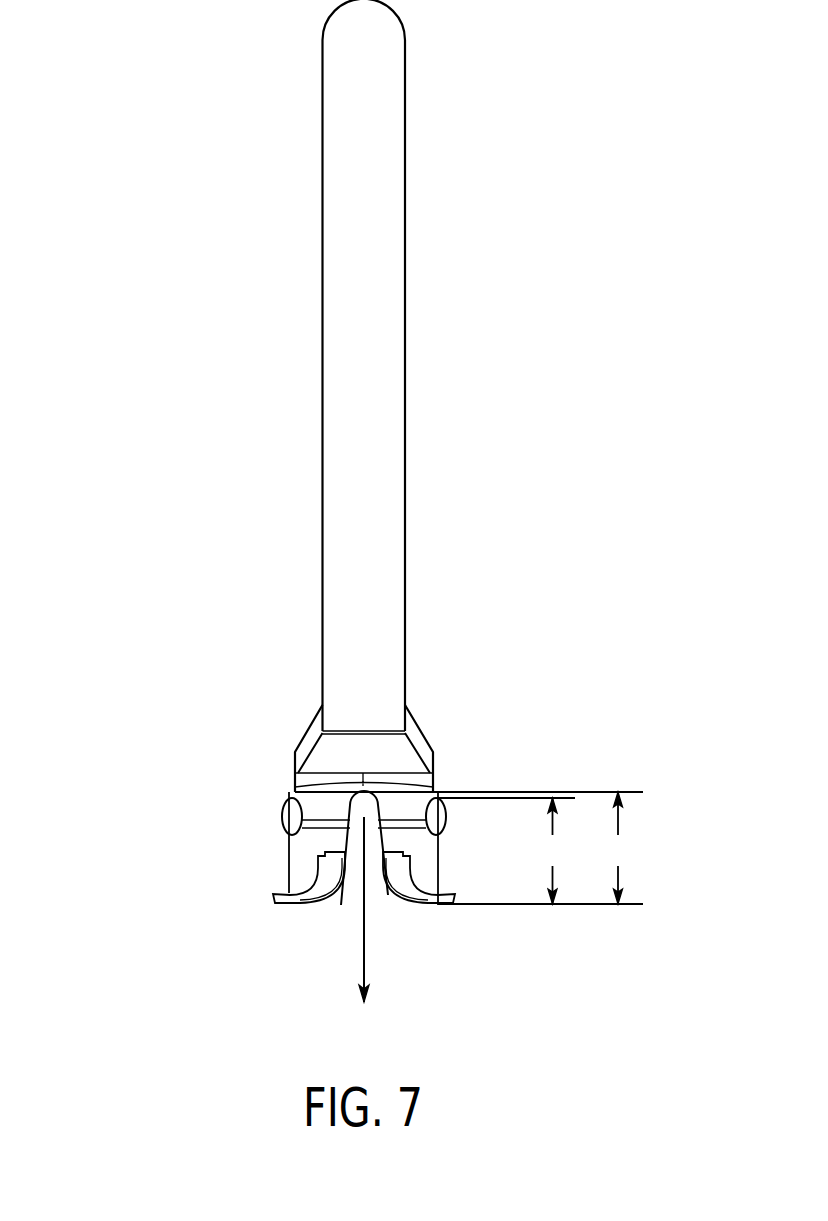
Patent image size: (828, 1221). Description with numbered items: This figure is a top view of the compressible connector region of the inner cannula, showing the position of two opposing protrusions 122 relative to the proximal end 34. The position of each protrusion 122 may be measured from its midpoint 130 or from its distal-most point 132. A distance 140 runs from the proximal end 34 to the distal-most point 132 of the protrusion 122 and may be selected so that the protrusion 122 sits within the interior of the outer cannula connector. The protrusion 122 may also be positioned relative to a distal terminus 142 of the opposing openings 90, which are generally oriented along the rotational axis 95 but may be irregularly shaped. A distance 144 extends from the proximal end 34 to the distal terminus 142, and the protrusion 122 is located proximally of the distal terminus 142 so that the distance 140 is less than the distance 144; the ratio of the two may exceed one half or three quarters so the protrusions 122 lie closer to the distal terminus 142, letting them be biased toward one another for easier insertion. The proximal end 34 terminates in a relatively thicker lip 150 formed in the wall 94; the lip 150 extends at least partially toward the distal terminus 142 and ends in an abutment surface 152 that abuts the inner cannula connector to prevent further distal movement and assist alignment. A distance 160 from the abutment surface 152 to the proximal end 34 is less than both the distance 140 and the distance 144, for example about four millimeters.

The wall 94 is at (342, 668).
The distal terminus 142 is at (363, 790).
The distal-most point 132 is at (293, 795).
The midpoint 130 is at (280, 812).
The protrusion 122 is at (447, 814).
The abutment surface 152 is at (288, 862).
The lip 150 is at (292, 893).
The distance 160 is at (410, 853).
The opening 90 is at (341, 908).
The proximal end 34 is at (440, 905).
The rotational axis 95 is at (363, 952).
The distance 140 is at (506, 851).
The distance 144 is at (538, 848).